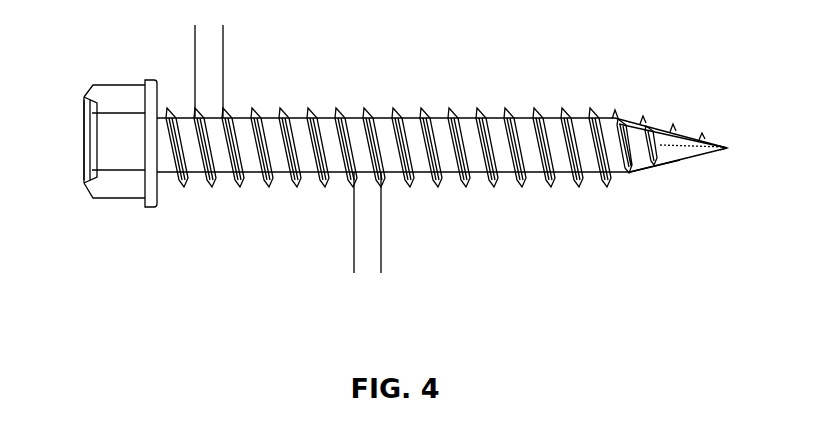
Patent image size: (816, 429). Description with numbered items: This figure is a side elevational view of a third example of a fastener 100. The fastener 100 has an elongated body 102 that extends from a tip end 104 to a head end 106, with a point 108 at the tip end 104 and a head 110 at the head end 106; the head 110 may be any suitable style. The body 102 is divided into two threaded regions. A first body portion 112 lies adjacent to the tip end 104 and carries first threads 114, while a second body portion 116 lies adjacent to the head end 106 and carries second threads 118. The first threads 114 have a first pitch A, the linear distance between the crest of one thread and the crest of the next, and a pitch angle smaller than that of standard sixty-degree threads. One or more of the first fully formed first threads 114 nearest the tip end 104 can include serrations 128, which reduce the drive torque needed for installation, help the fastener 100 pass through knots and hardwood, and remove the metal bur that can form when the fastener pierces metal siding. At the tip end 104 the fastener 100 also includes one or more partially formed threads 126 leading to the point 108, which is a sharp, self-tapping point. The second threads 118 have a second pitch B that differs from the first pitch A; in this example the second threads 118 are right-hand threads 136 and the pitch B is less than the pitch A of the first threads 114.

The fastener 100 is at (85, 82).
The body 102 is at (377, 111).
The tip end 104 is at (677, 190).
The head end 106 is at (133, 220).
The point 108 is at (727, 147).
The head 110 is at (85, 182).
The first body portion 112 is at (518, 112).
The first threads 114 is at (493, 177).
The second body portion 116 is at (245, 184).
The second threads 118 is at (200, 184).
The partially formed threads 126 is at (652, 177).
The serrations 128 is at (588, 102).
The right-hand threads 136 is at (255, 112).
The first pitch A is at (317, 247).
The second pitch B is at (160, 42).